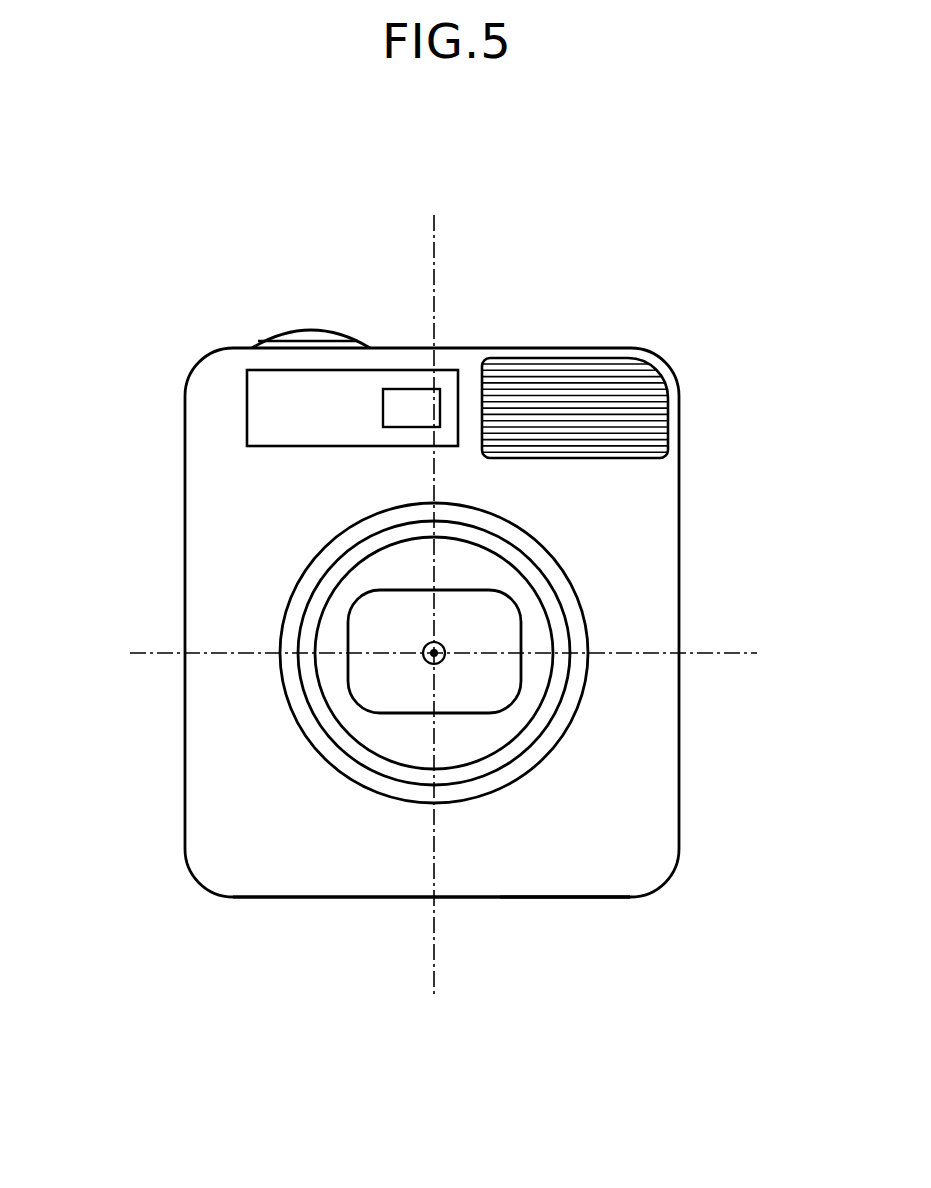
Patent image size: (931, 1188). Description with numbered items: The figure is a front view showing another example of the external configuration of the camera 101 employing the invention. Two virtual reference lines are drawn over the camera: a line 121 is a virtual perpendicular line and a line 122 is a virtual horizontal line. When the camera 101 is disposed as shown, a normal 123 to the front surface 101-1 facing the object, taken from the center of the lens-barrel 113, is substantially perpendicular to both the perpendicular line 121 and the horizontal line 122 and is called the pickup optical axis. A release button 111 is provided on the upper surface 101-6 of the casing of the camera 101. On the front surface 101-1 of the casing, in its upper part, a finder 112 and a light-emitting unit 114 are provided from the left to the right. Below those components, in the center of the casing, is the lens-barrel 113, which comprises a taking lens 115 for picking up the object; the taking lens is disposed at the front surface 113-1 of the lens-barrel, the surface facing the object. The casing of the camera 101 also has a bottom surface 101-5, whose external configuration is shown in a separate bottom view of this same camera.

The camera 101 is at (106, 900).
The front surface 101-1 is at (311, 877).
The bottom surface 101-5 is at (541, 898).
The upper surface 101-6 is at (553, 347).
The release button 111 is at (313, 330).
The finder 112 is at (368, 388).
The lens-barrel 113 is at (573, 623).
The front surface of the lens-barrel 113-1 is at (535, 685).
The light-emitting unit 114 is at (630, 399).
The taking lens 115 is at (490, 692).
The perpendicular line 121 is at (444, 594).
The horizontal line 122 is at (472, 654).
The normal 123 is at (447, 650).